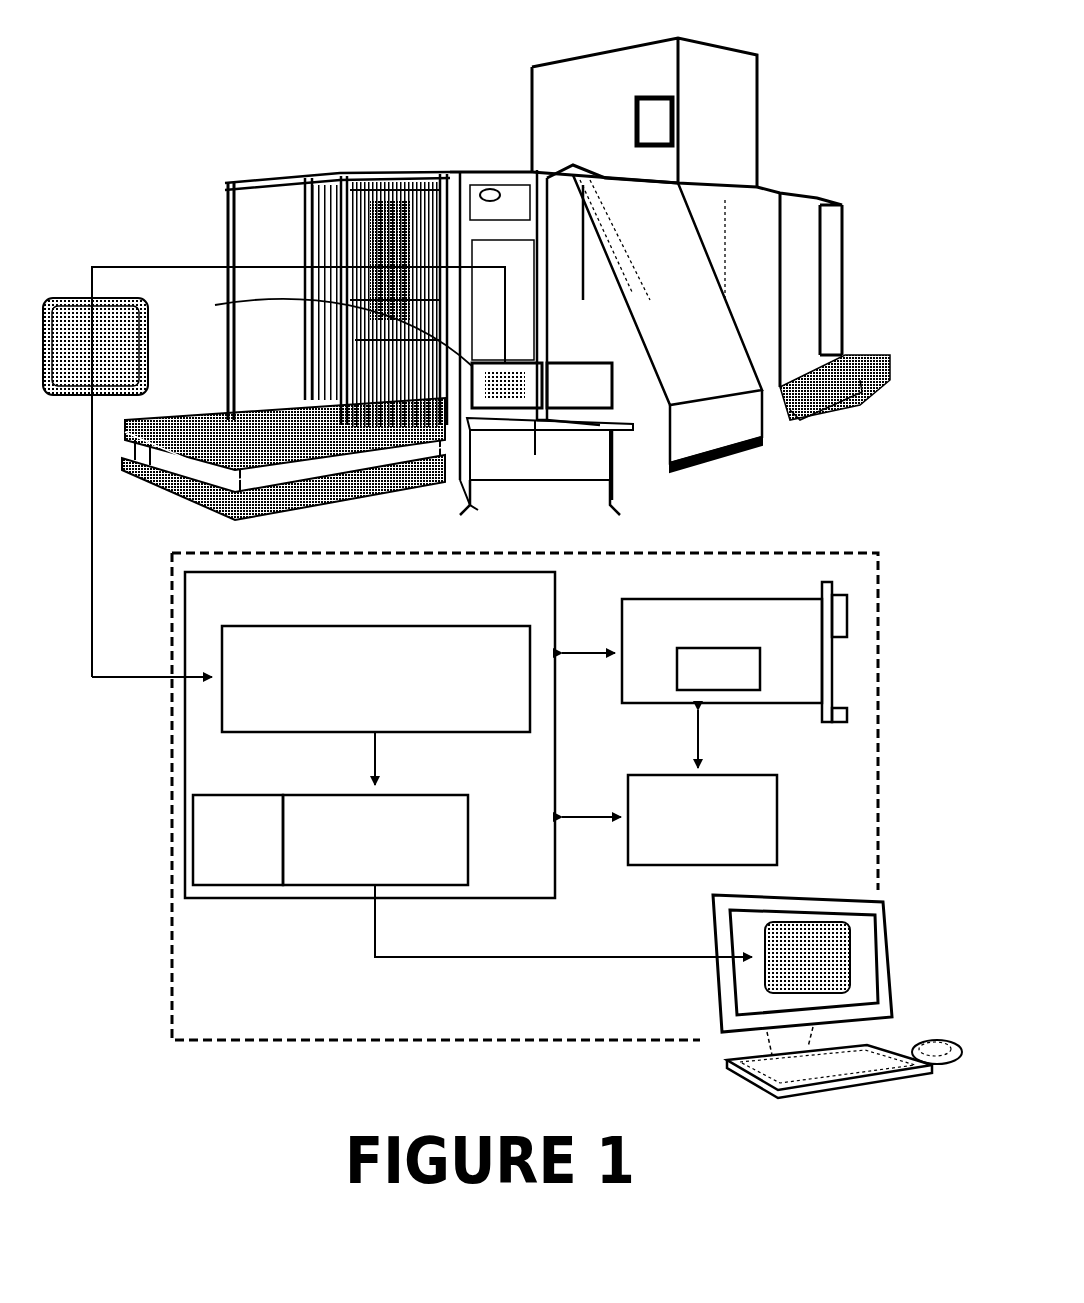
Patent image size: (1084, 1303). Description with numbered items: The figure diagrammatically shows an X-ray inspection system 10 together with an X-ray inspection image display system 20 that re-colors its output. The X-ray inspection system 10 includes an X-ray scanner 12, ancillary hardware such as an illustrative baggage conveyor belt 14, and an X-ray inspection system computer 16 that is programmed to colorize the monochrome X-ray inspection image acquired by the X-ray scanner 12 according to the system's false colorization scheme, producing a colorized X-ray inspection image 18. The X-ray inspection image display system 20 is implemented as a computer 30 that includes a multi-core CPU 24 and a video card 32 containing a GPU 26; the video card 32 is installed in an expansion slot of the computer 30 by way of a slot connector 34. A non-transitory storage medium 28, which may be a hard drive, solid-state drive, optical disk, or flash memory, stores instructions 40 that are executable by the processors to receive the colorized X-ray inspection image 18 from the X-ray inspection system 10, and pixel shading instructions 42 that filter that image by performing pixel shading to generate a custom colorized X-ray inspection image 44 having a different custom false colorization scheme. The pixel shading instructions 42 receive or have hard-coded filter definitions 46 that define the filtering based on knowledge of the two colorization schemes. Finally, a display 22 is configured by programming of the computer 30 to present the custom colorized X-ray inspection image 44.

The X-ray inspection system 10 is at (214, 109).
The X-ray scanner 12 is at (785, 145).
The baggage conveyor belt 14 is at (292, 397).
The X-ray inspection system computer 16 is at (544, 444).
The colorized X-ray inspection image 18 is at (142, 340).
The X-ray inspection image display system 20 is at (912, 580).
The display 22 is at (865, 955).
The multi-core CPU 24 is at (777, 813).
The GPU 26 is at (737, 690).
The non-transitory storage medium 28 is at (185, 622).
The computer 30 is at (715, 1053).
The video card 32 is at (707, 599).
The slot connector 34 is at (847, 638).
The instructions 40 is at (475, 732).
The pixel shading instructions 42 is at (468, 837).
The custom colorized X-ray inspection image 44 is at (768, 940).
The filter definitions 46 is at (237, 795).